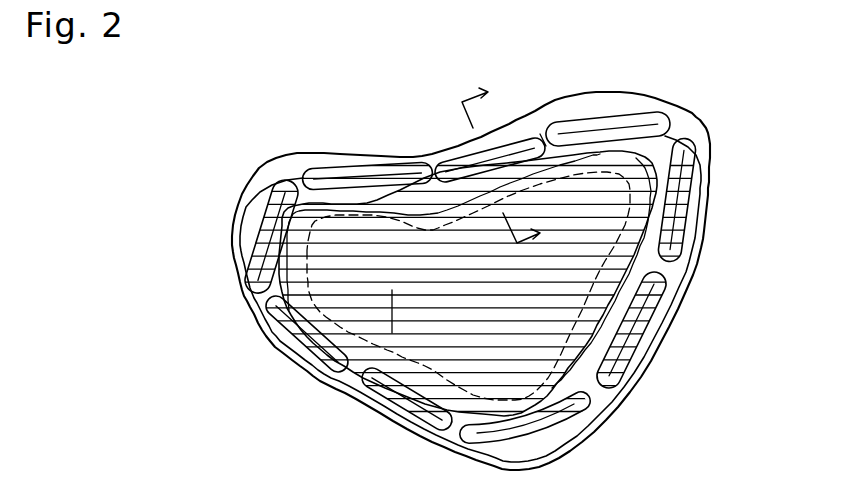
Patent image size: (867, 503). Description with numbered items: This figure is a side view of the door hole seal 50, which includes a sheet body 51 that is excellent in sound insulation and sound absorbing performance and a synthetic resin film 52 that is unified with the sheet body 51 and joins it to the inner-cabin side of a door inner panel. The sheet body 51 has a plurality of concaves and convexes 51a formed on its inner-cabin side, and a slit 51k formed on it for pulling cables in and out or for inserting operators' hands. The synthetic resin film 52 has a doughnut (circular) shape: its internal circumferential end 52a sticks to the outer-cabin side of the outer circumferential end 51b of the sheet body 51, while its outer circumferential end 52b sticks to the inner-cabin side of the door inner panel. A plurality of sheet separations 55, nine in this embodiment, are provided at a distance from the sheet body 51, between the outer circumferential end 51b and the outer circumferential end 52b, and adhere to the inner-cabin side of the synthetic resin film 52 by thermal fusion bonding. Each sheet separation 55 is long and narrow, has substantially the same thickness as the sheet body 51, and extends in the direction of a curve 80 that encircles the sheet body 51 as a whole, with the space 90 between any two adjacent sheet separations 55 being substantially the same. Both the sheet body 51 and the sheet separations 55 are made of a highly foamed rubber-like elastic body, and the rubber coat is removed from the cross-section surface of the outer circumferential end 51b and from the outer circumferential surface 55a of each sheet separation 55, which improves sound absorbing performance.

The door hole seal 50 is at (704, 70).
The sheet body 51 is at (489, 246).
The concaves and convexes 51a is at (585, 262).
The outer circumferential end of the sheet body 51b is at (367, 203).
The slit 51k is at (392, 313).
The synthetic resin film 52 is at (433, 150).
The internal circumferential end of the synthetic resin film 52a is at (422, 230).
The outer circumferential end of the synthetic resin film 52b is at (440, 152).
The sheet separation 55 is at (605, 112).
The outer circumferential surface of the sheet separation 55a is at (628, 102).
The curve 80 is at (682, 110).
The space 90 is at (543, 140).